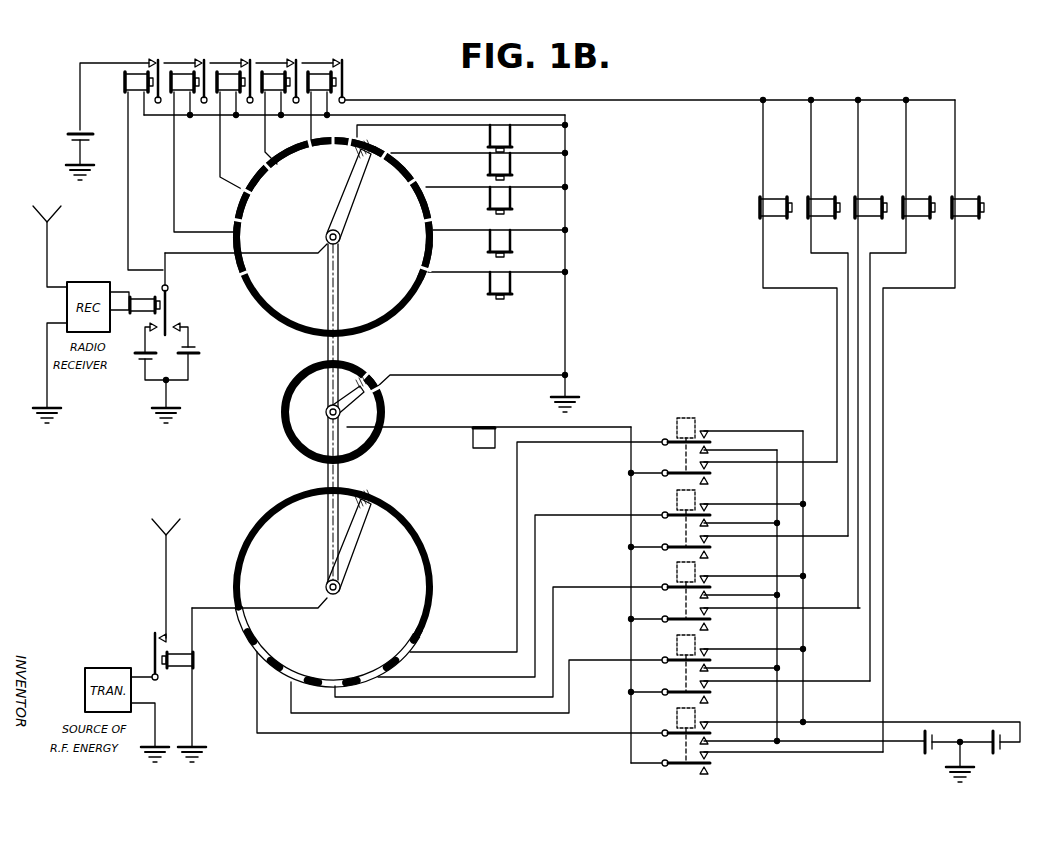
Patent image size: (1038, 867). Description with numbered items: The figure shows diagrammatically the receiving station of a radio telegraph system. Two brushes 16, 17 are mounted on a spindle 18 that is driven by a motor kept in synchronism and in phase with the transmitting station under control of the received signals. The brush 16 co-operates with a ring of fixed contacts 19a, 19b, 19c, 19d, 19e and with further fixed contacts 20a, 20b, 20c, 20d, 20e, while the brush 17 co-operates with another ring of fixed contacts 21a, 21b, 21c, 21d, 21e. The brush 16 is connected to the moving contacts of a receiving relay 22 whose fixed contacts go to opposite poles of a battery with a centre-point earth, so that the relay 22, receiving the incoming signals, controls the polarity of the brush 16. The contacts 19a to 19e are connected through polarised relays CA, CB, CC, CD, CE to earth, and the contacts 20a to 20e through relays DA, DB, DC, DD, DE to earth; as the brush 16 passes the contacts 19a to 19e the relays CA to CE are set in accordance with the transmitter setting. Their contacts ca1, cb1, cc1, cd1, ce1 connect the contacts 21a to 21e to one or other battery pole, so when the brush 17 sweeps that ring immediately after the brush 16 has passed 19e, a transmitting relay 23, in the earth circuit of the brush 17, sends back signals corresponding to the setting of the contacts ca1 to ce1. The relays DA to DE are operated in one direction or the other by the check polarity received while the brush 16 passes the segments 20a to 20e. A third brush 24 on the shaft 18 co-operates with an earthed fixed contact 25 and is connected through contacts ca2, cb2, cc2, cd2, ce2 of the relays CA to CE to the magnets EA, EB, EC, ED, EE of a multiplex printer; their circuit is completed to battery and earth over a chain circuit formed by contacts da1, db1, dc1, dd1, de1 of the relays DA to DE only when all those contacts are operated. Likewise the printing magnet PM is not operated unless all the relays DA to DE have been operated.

The brush 16 is at (351, 206).
The brush 17 is at (352, 561).
The spindle 18 is at (328, 350).
The fixed contact 19a is at (358, 140).
The fixed contact 19b is at (393, 156).
The fixed contact 19c is at (420, 188).
The fixed contact 19d is at (430, 233).
The fixed contact 19e is at (427, 273).
The fixed contact 20a is at (248, 270).
The fixed contact 20b is at (243, 233).
The fixed contact 20c is at (248, 195).
The fixed contact 20d is at (276, 165).
The fixed contact 20e is at (304, 146).
The fixed contact 21a is at (402, 643).
The fixed contact 21b is at (380, 667).
The fixed contact 21c is at (342, 678).
The fixed contact 21d is at (306, 657).
The fixed contact 21e is at (262, 648).
The receiving relay 22 is at (138, 297).
The transmitting relay 23 is at (181, 668).
The third brush 24 is at (347, 405).
The fixed contact 25 is at (382, 388).
The relay DA is at (135, 93).
The relay DB is at (181, 93).
The relay DC is at (227, 93).
The relay DD is at (272, 93).
The relay DE is at (320, 93).
The contact of relay DA da1 is at (166, 48).
The contact of relay DB db1 is at (212, 48).
The contact of relay DC dc1 is at (258, 48).
The contact of relay DD dd1 is at (304, 48).
The contact of relay DE de1 is at (350, 48).
The polarised relay CA is at (508, 140).
The polarised relay CB is at (508, 170).
The polarised relay CC is at (508, 202).
The polarised relay CD is at (508, 245).
The polarised relay CE is at (508, 287).
The contact of relay CA ca1 is at (710, 443).
The contact of relay CA ca2 is at (710, 474).
The contact of relay CB cb1 is at (710, 516).
The contact of relay CB cb2 is at (710, 548).
The contact of relay CC cc1 is at (710, 588).
The contact of relay CC cc2 is at (710, 620).
The contact of relay CD cd1 is at (710, 661).
The contact of relay CD cd2 is at (710, 693).
The contact of relay CE ce1 is at (710, 734).
The contact of relay CE ce2 is at (710, 764).
The magnet of multiplex printer EA is at (774, 197).
The magnet of multiplex printer EB is at (822, 197).
The magnet of multiplex printer EC is at (869, 197).
The magnet of multiplex printer ED is at (917, 197).
The magnet of multiplex printer EE is at (966, 197).
The printing magnet PM is at (486, 427).